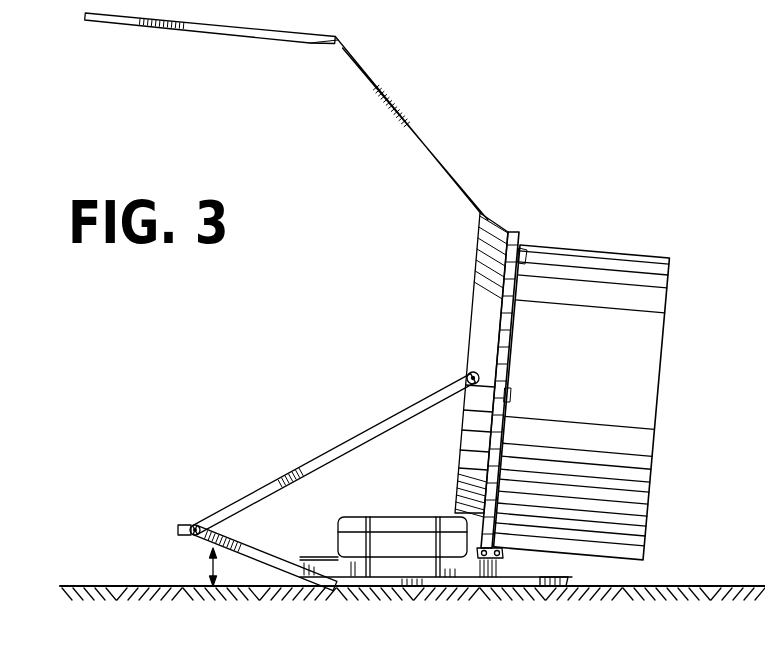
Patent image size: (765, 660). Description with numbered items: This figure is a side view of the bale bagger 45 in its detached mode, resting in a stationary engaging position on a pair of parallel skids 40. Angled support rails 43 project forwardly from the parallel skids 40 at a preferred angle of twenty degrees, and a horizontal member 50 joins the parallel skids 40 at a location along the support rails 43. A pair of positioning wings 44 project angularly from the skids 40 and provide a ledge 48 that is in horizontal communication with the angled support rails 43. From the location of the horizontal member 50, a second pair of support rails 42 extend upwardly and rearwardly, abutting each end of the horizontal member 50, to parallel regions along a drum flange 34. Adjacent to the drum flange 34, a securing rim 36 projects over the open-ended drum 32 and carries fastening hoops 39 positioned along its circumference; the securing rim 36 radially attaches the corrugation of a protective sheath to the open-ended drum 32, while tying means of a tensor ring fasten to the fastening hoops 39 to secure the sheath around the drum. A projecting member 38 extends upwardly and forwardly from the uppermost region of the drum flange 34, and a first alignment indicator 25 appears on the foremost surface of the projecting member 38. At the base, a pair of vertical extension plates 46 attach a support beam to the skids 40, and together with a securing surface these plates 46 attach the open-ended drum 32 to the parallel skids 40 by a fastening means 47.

The first alignment indicator 25 is at (85, 15).
The open-ended drum 32 is at (605, 277).
The drum flange 34 is at (485, 312).
The securing rim 36 is at (515, 232).
The projecting member 38 is at (380, 88).
The fastening hoops 39 is at (522, 258).
The parallel skids 40 is at (381, 580).
The second pair of support rails 42 is at (348, 443).
The angled support rails 43 is at (247, 547).
The positioning wings 44 is at (400, 522).
The bale bagger 45 is at (376, 338).
The vertical extension plates 46 is at (510, 573).
The fastening means 47 is at (503, 551).
The ledge 48 is at (335, 587).
The horizontal member 50 is at (178, 530).